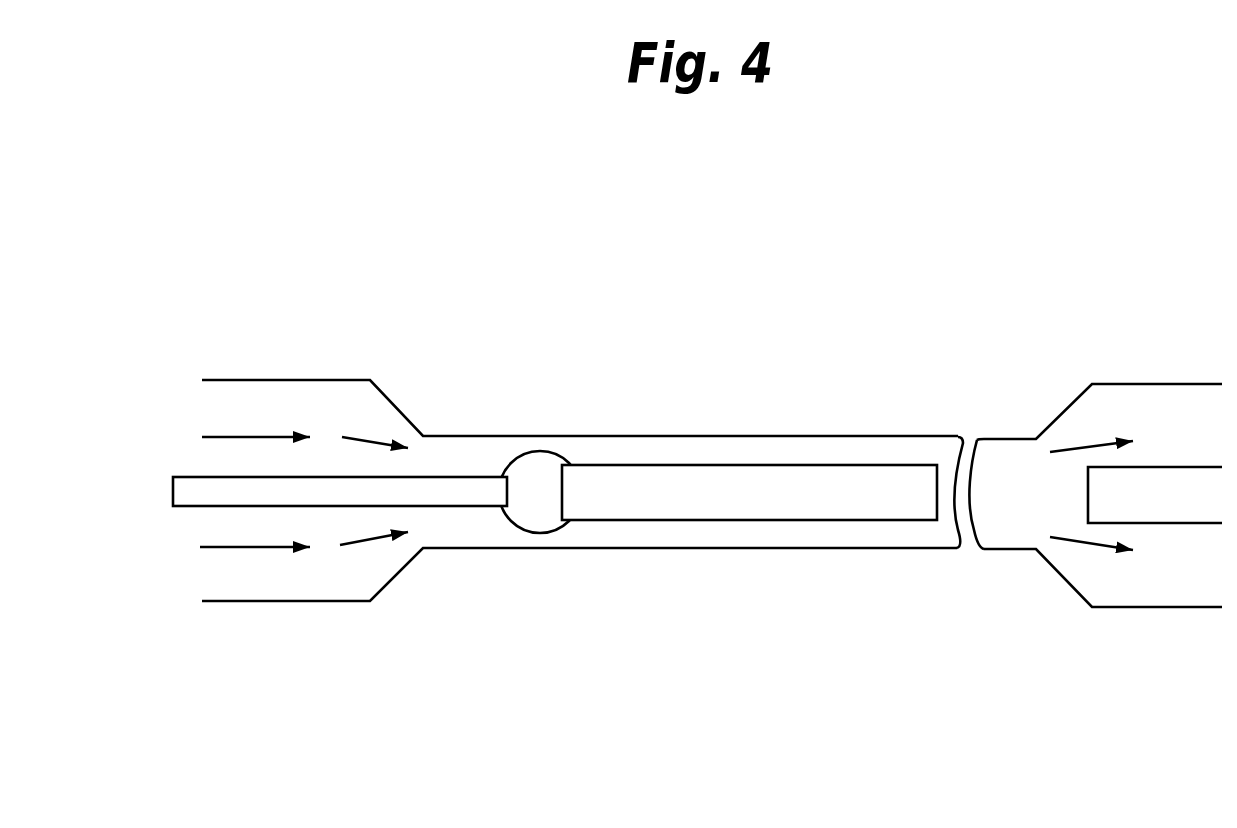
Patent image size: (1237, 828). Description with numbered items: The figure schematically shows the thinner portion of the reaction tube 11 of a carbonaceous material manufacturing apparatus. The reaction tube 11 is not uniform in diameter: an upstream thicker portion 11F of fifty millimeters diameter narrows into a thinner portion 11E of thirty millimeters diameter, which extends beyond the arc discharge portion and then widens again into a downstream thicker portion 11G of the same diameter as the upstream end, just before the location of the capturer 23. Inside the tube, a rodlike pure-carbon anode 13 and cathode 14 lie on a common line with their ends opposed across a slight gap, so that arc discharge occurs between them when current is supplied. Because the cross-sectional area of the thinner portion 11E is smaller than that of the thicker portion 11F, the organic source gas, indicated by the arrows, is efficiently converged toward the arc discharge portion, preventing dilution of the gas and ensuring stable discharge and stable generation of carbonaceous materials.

The reaction tube 11 is at (746, 697).
The thinner portion 11E is at (658, 548).
The thicker portion 11F is at (278, 601).
The thicker portion 11G is at (1170, 607).
The anode 13 is at (435, 487).
The cathode 14 is at (740, 482).
The capturer 23 is at (1163, 480).